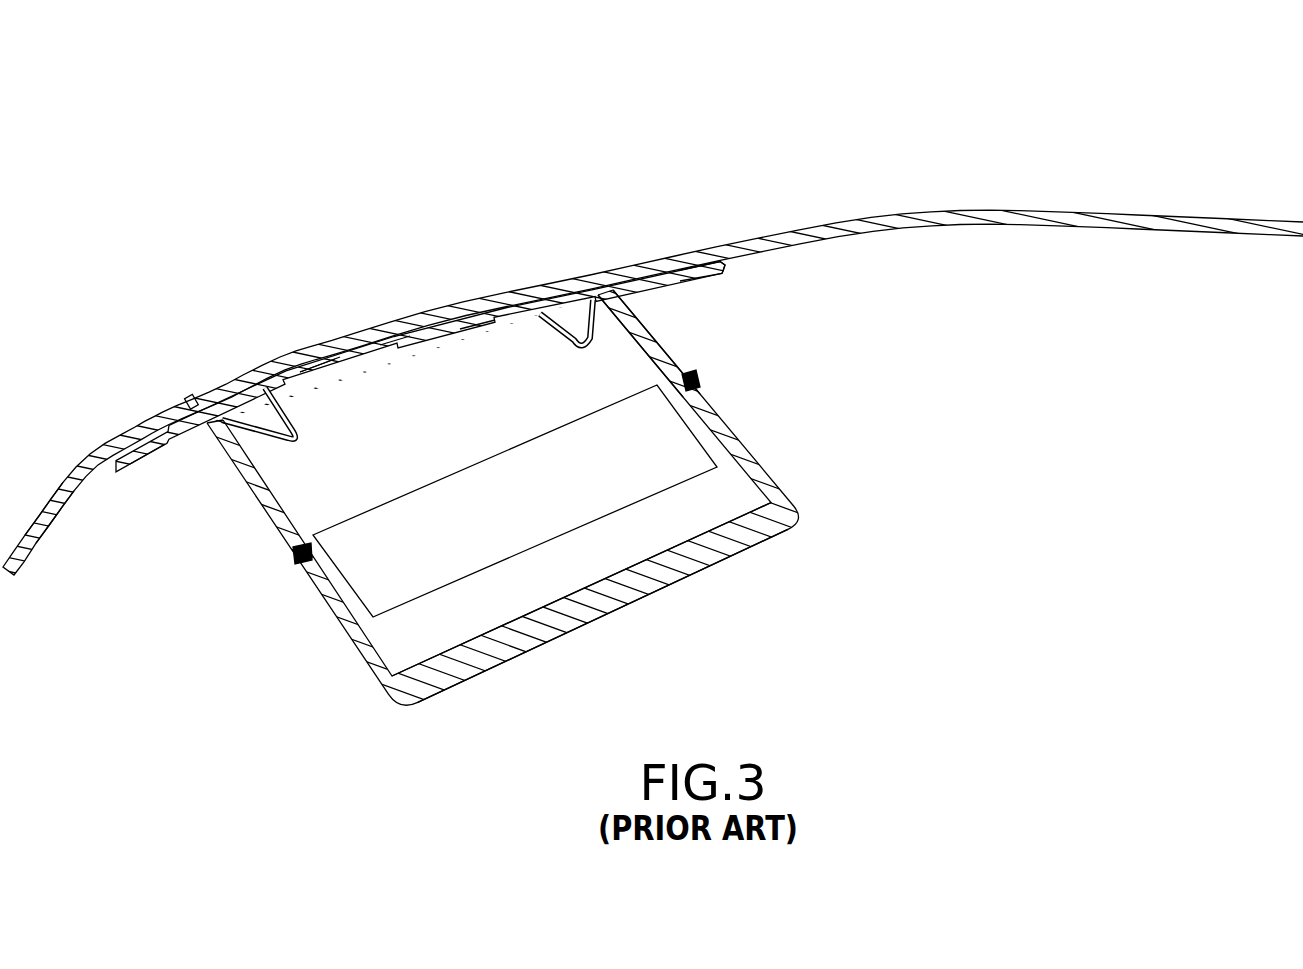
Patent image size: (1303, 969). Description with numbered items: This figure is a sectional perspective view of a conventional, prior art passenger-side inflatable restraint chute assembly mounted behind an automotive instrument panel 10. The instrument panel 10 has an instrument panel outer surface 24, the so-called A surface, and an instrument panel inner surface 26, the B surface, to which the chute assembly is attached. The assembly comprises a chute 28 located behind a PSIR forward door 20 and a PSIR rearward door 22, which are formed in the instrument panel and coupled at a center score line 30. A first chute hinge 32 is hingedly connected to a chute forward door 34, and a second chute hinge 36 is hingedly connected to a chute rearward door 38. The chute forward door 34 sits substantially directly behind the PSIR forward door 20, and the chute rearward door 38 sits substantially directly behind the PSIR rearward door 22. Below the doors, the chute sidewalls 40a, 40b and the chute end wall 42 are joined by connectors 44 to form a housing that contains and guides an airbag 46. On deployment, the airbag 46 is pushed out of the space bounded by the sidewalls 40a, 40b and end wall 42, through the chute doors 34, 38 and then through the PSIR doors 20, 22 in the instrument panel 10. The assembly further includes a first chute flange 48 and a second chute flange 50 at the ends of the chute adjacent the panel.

The automotive instrument panel 10 is at (1014, 214).
The PSIR forward door 20 is at (505, 301).
The PSIR rearward door 22 is at (322, 356).
The instrument panel outer surface 24 is at (51, 510).
The instrument panel inner surface 26 is at (60, 513).
The chute 28 is at (852, 356).
The center score line 30 is at (397, 342).
The first chute hinge 32 is at (573, 340).
The chute forward door 34 is at (474, 327).
The second chute hinge 36 is at (303, 436).
The chute rearward door 38 is at (333, 372).
The chute sidewall 40a is at (273, 522).
The chute sidewall 40b is at (650, 337).
The chute end wall 42 is at (645, 589).
The connectors 44 is at (298, 557).
The airbag 46 is at (667, 440).
The first chute flange 48 is at (147, 443).
The second chute flange 50 is at (686, 276).